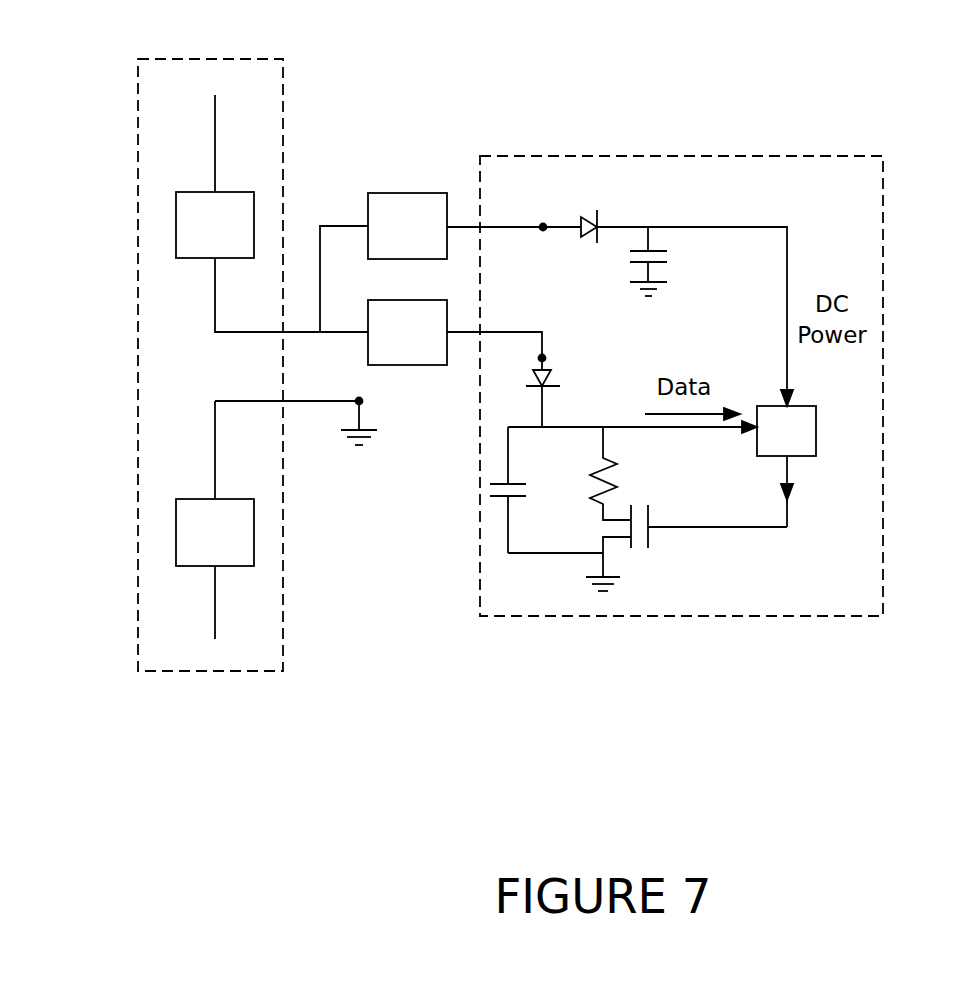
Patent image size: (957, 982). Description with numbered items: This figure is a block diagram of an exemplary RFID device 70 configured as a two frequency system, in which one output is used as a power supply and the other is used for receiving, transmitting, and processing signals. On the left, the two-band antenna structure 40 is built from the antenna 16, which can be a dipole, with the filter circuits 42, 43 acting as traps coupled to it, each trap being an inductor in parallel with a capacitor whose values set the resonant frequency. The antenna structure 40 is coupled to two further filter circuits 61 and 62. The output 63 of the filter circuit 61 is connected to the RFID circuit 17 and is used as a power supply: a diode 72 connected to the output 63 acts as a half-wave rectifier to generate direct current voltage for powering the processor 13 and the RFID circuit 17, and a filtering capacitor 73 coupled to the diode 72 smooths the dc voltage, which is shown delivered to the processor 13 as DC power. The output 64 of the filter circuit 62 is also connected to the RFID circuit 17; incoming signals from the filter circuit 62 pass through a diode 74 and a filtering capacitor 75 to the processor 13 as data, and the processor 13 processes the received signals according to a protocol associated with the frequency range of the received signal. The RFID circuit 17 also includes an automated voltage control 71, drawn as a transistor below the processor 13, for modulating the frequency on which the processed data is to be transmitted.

The power and data coupling circuit 70 is at (850, 47).
The two-band antenna structure 40 is at (243, 59).
The antenna 16 is at (215, 125).
The filter circuit 42 is at (201, 240).
The filter circuit 43 is at (201, 547).
The filter circuit 61 is at (393, 241).
The filter circuit 62 is at (393, 347).
The RFID circuit 17 is at (883, 283).
The output 63 is at (544, 230).
The output 64 is at (545, 359).
The diode 72 is at (597, 212).
The filtering capacitor 73 is at (655, 264).
The diode 74 is at (553, 373).
The filtering capacitor 75 is at (513, 498).
The automated voltage control 71 is at (650, 540).
The processor 13 is at (773, 445).